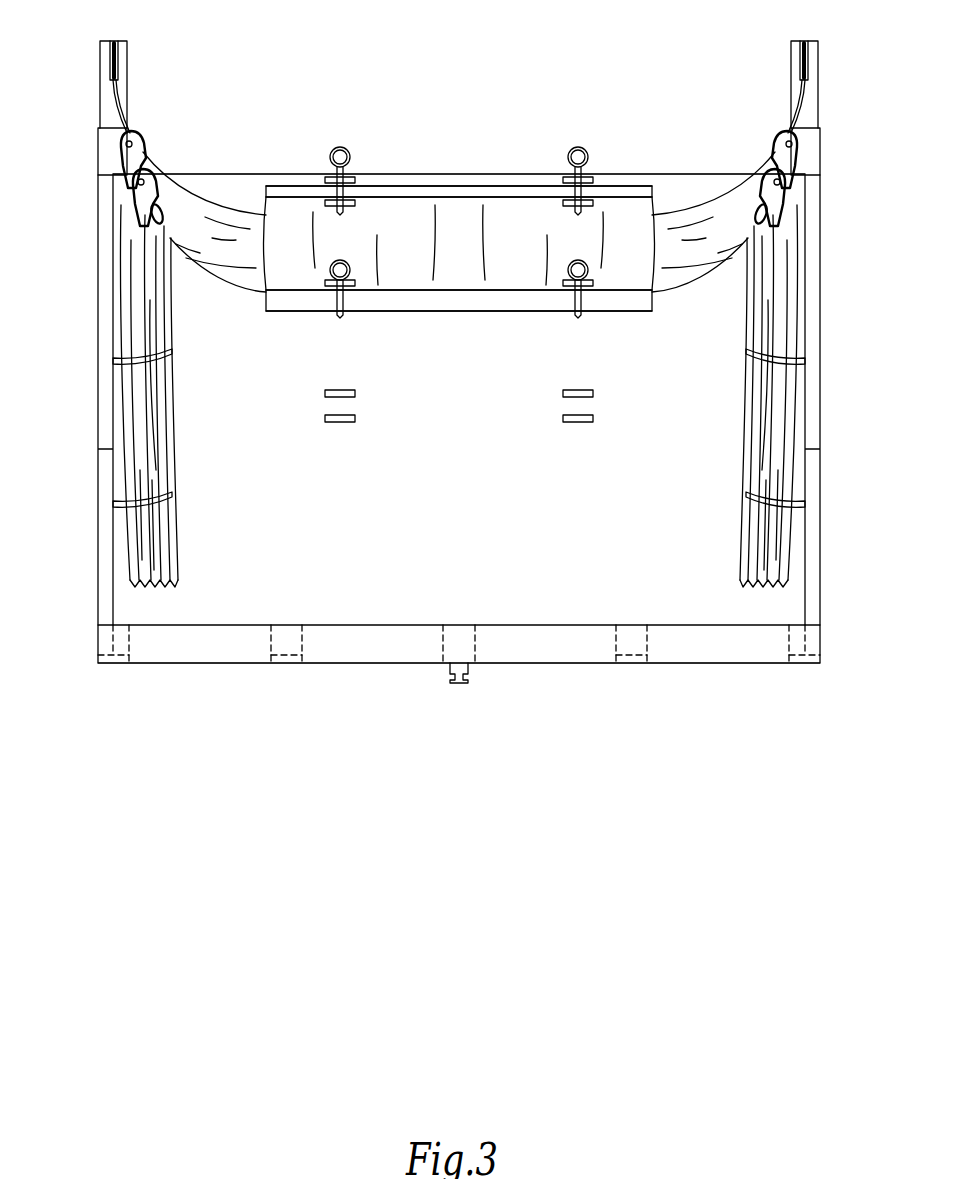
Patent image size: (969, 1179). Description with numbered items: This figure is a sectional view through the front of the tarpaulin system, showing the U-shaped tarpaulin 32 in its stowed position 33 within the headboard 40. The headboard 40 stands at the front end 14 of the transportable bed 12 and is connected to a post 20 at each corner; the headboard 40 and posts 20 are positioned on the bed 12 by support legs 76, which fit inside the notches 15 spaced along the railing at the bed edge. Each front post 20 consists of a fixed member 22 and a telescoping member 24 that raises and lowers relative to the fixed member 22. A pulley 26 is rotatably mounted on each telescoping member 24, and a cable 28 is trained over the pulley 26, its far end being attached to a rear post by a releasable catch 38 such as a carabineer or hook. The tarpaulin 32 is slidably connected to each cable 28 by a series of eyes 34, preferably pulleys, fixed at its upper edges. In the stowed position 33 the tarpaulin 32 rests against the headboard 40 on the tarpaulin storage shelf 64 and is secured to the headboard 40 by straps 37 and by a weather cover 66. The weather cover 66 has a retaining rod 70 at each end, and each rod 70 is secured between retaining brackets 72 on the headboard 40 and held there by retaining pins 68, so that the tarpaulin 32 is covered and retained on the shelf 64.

The transportable bed 12 is at (390, 659).
The front end 14 is at (508, 651).
The notches 15 is at (120, 640).
The post 20 is at (103, 391).
The fixed member 22 is at (100, 149).
The telescoping member 24 is at (107, 98).
The pulley 26 is at (114, 41).
The cable 28 is at (119, 102).
The U-shaped tarpaulin 32 is at (152, 412).
The stowed position 33 is at (157, 448).
The eyes 34 is at (134, 195).
The straps 37 is at (173, 351).
The releasable catch 38 is at (152, 222).
The headboard 40 is at (452, 396).
The tarpaulin storage shelf 64 is at (448, 303).
The weather cover 66 is at (452, 259).
The retaining pins 68 is at (350, 148).
The retaining rods 70 is at (423, 193).
The retaining brackets 72 is at (330, 178).
The support legs 76 is at (107, 641).